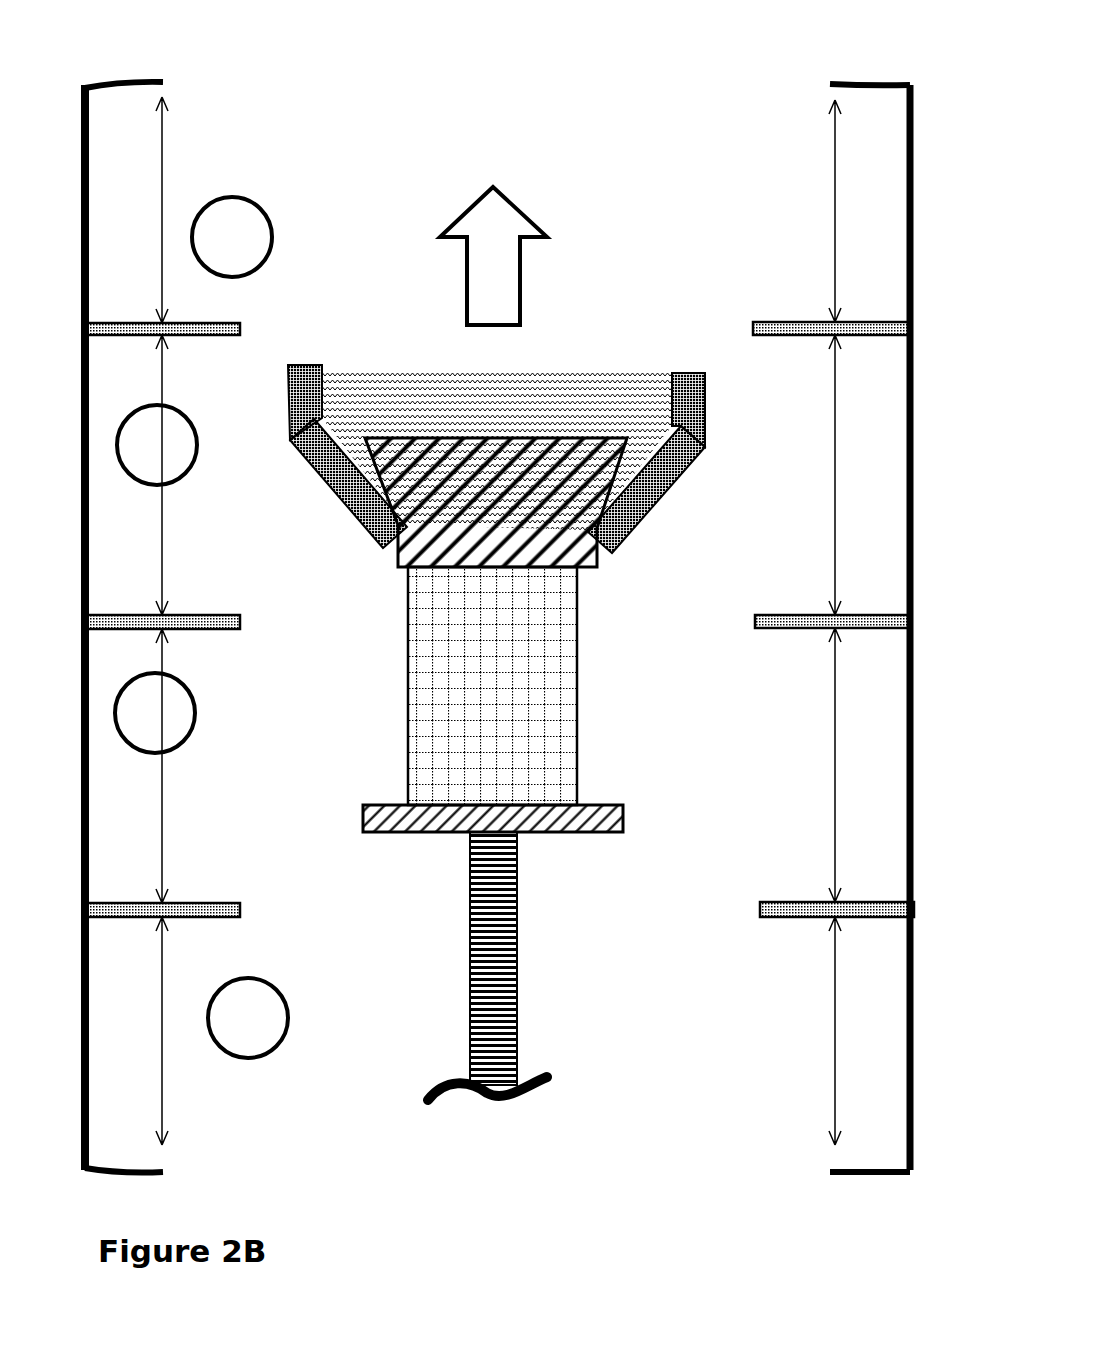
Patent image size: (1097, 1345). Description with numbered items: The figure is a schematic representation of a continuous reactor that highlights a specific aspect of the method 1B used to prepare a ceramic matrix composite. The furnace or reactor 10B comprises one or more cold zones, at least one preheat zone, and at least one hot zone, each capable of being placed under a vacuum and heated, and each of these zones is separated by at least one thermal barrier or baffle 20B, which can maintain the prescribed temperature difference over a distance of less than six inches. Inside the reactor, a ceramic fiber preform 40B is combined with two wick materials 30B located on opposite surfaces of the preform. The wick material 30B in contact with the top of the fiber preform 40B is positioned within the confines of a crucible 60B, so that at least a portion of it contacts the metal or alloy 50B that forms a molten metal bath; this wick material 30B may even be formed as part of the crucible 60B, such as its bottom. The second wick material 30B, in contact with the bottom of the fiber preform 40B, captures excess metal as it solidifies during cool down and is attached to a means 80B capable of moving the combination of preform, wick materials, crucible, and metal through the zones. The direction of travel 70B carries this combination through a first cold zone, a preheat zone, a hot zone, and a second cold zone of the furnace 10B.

The method 1B is at (656, 139).
The furnace or reactor 10B is at (910, 82).
The thermal barrier or baffle 20B is at (763, 632).
The wick material 30B is at (408, 570).
The ceramic fiber preform 40B is at (557, 647).
The metal or alloy 50B is at (365, 407).
The crucible 60B is at (693, 463).
The direction of travel 70B is at (500, 285).
The means for moving or transferring 80B is at (510, 988).